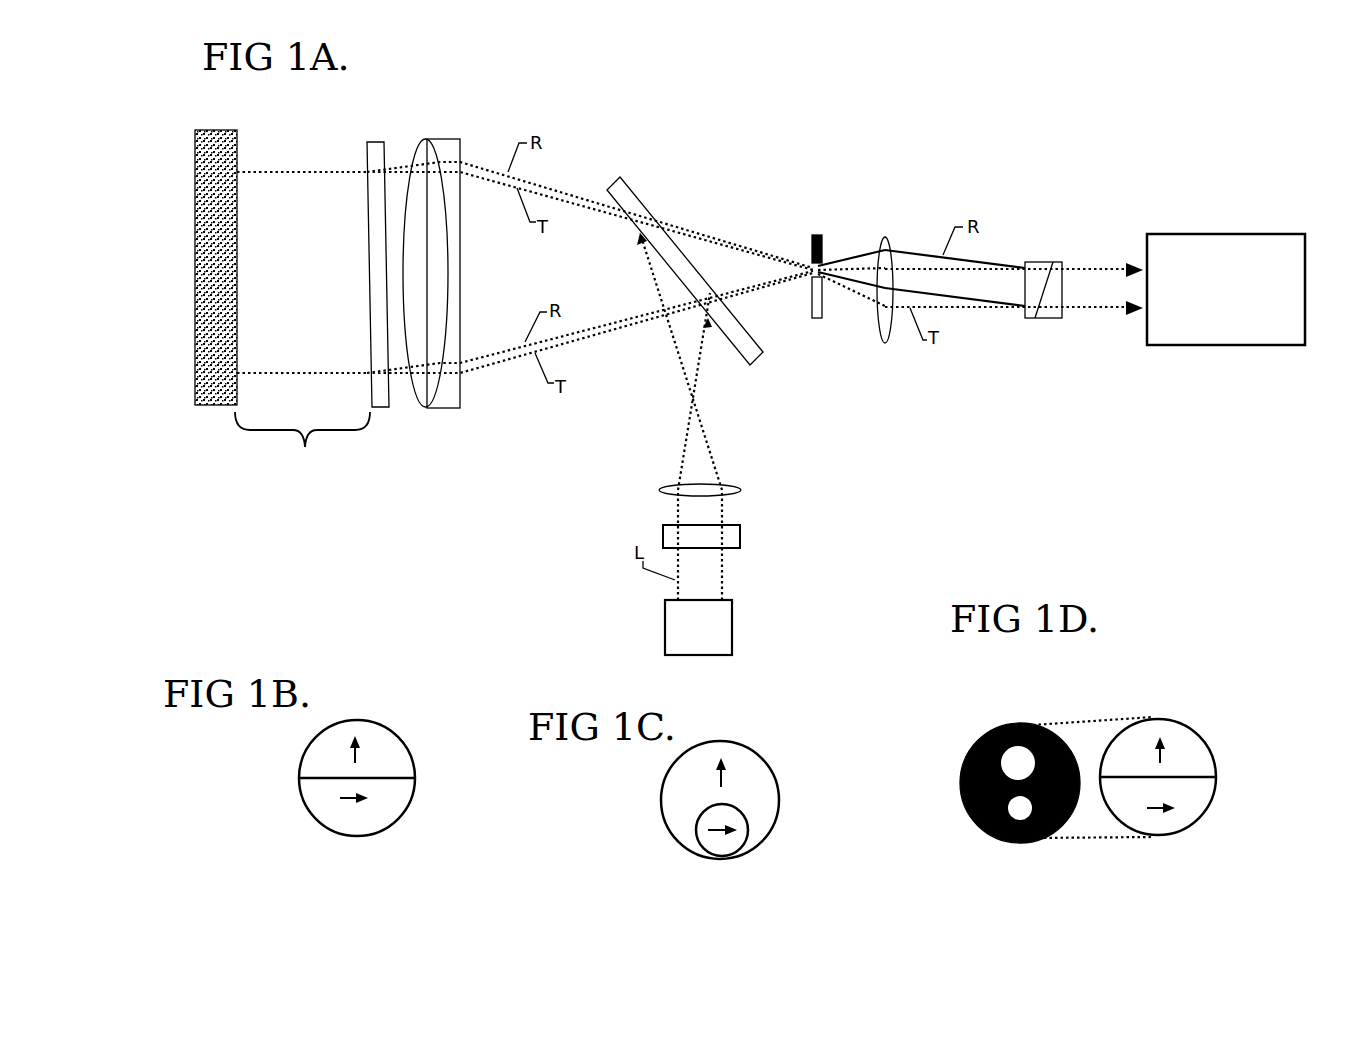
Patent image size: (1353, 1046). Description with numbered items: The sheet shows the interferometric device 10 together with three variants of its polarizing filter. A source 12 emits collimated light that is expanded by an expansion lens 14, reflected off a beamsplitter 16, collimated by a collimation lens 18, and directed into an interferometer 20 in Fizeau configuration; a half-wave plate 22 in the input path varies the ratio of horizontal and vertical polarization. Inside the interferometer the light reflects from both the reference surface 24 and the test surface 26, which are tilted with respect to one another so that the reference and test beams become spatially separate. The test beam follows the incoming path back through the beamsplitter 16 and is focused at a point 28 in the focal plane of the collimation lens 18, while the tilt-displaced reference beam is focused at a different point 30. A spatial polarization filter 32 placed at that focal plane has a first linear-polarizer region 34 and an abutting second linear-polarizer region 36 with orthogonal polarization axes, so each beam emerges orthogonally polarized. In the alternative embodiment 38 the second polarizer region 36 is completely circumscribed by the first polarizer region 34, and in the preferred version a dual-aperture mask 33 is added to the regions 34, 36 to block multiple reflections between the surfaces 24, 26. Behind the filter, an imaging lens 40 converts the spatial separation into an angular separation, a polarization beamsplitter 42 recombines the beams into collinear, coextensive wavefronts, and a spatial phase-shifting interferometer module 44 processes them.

In FIG. 1A, the interferometric device 10 is at (766, 148).
In FIG. 1A, the source 12 is at (732, 602).
In FIG. 1A, the expansion lens 14 is at (741, 491).
In FIG. 1A, the beamsplitter 16 is at (621, 178).
In FIG. 1A, the collimation lens 18 is at (460, 139).
In FIG. 1A, the interferometer 20 is at (302, 441).
In FIG. 1A, the half-wave plate 22 is at (740, 535).
In FIG. 1A, the reference surface 24 is at (367, 142).
In FIG. 1A, the test surface 26 is at (238, 130).
In FIG. 1A, the focal point of test beam 28 is at (822, 290).
In FIG. 1A, the focal point of reference beam 30 is at (812, 262).
In FIG. 1A, the spatial polarization filter 32 is at (817, 235).
In FIG. 1B, the spatial polarization filter 32 is at (417, 719).
In FIG. 1D, the dual-aperture mask 33 is at (1032, 843).
In FIG. 1B, the first linear-polarizer region 34 is at (348, 730).
In FIG. 1C, the first linear-polarizer region 34 is at (716, 752).
In FIG. 1D, the first linear-polarizer region 34 is at (1153, 730).
In FIG. 1B, the second linear-polarizer region 36 is at (362, 813).
In FIG. 1C, the second linear-polarizer region 36 is at (727, 843).
In FIG. 1D, the second linear-polarizer region 36 is at (1167, 823).
In FIG. 1C, the polarization filter embodiment 38 is at (793, 739).
In FIG. 1A, the imaging lens 40 is at (889, 240).
In FIG. 1A, the polarization beamsplitter 42 is at (1045, 320).
In FIG. 1A, the spatial phase-shifting interferometer module 44 is at (1173, 345).